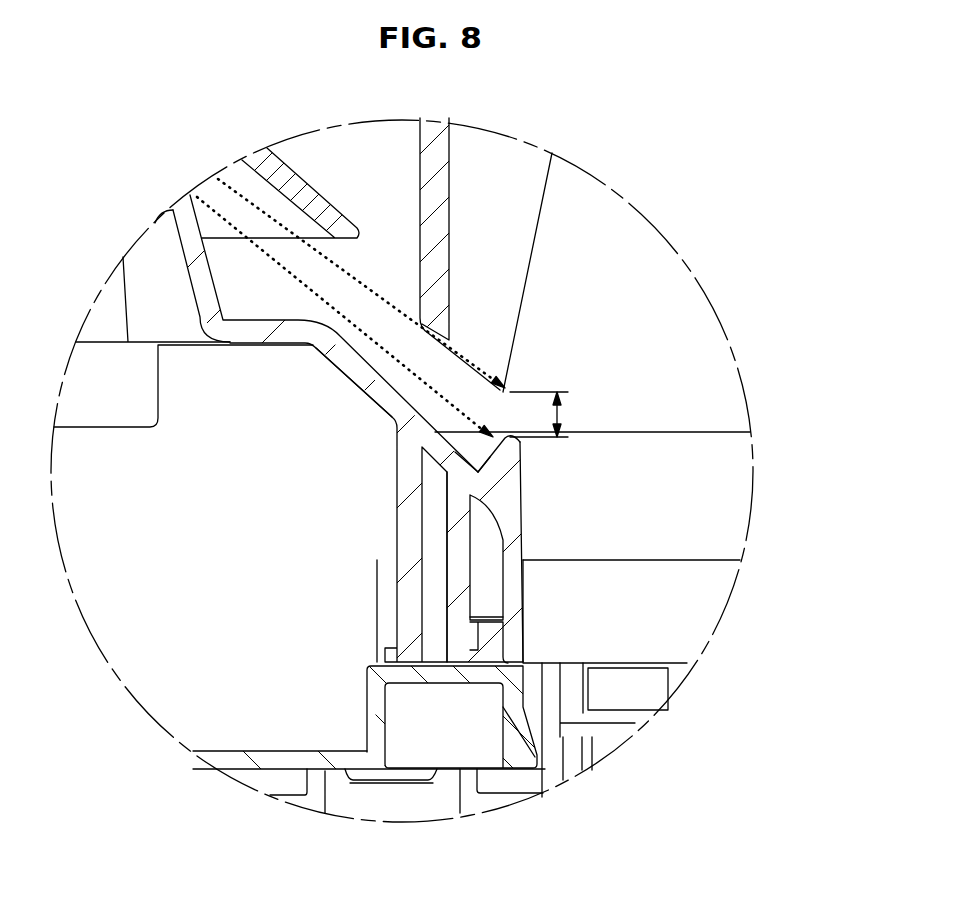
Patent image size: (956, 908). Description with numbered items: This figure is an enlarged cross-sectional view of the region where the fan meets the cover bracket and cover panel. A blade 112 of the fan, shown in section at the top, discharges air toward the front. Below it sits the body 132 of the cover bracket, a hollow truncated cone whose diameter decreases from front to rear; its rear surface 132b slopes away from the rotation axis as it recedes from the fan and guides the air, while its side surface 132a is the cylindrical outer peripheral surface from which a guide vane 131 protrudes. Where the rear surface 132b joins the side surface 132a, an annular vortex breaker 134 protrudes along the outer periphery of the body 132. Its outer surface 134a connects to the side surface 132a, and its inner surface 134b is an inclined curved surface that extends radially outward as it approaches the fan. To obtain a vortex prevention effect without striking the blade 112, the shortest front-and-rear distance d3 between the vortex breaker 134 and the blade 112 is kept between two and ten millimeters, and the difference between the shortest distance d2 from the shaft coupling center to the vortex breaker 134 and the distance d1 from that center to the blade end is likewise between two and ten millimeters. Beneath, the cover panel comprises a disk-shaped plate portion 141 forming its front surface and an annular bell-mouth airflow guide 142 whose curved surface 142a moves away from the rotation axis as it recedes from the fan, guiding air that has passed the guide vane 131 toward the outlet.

The blade 112 is at (518, 230).
The guide vane 131 is at (677, 616).
The body 132 is at (343, 373).
The side surface 132a is at (525, 578).
The rear surface 132b is at (375, 365).
The vortex breaker 134 is at (527, 518).
The outer surface 134a is at (525, 470).
The inner surface 134b is at (482, 462).
The plate portion 141 is at (365, 758).
The airflow guide 142 is at (512, 712).
The curved surface 142a is at (530, 728).
The distance d1 is at (470, 358).
The shortest distance d2 is at (422, 376).
The shortest distance d3 is at (549, 414).